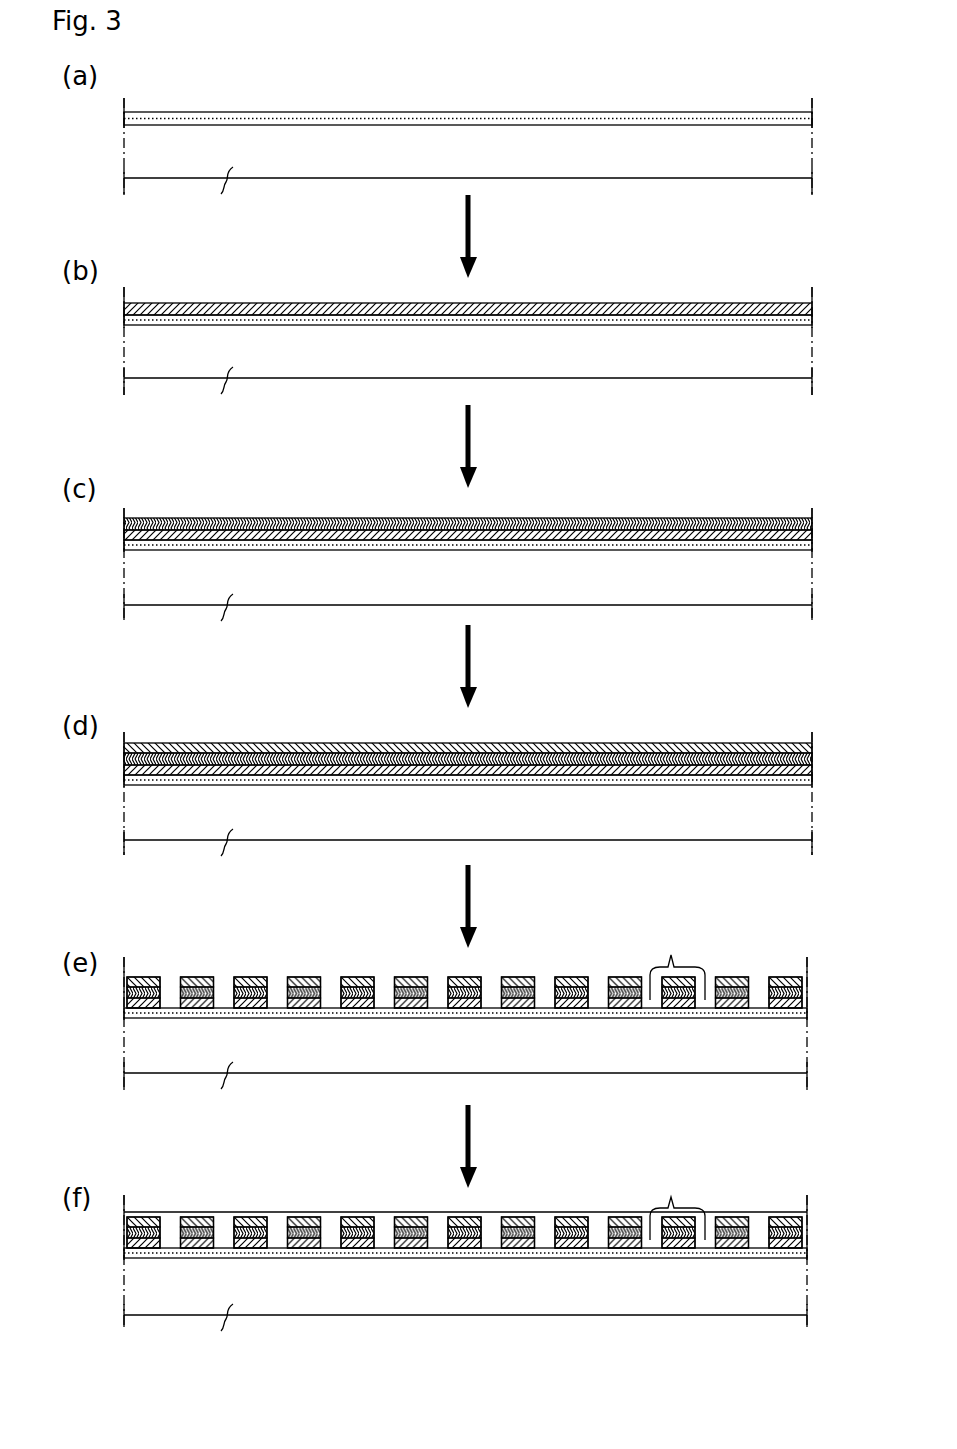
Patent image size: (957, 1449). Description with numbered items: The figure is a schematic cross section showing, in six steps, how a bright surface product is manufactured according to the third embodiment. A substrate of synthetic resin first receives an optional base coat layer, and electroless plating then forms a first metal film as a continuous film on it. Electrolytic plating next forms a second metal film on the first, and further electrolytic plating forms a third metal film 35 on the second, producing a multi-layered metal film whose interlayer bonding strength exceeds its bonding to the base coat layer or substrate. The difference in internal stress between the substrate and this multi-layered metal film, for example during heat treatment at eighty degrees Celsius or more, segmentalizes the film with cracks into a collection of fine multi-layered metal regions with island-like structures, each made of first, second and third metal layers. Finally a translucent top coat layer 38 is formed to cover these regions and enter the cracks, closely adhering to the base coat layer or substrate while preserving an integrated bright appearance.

The third metal film 35 is at (586, 750).
The top coat layer 38 is at (329, 1230).